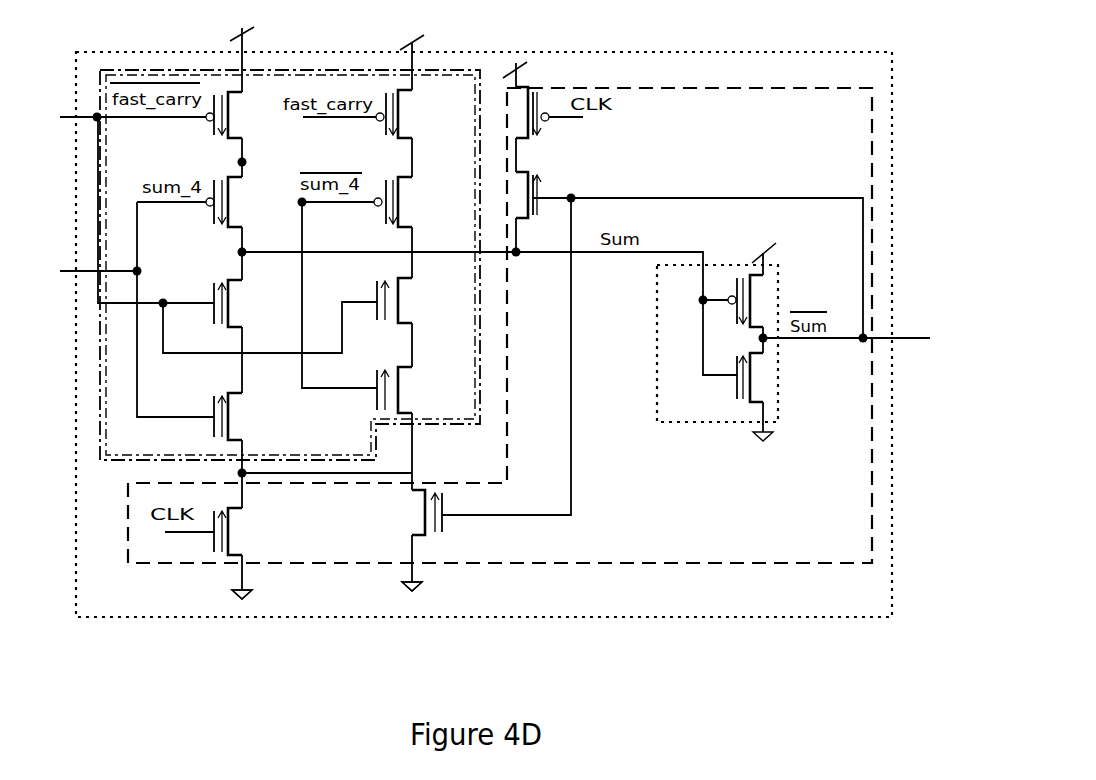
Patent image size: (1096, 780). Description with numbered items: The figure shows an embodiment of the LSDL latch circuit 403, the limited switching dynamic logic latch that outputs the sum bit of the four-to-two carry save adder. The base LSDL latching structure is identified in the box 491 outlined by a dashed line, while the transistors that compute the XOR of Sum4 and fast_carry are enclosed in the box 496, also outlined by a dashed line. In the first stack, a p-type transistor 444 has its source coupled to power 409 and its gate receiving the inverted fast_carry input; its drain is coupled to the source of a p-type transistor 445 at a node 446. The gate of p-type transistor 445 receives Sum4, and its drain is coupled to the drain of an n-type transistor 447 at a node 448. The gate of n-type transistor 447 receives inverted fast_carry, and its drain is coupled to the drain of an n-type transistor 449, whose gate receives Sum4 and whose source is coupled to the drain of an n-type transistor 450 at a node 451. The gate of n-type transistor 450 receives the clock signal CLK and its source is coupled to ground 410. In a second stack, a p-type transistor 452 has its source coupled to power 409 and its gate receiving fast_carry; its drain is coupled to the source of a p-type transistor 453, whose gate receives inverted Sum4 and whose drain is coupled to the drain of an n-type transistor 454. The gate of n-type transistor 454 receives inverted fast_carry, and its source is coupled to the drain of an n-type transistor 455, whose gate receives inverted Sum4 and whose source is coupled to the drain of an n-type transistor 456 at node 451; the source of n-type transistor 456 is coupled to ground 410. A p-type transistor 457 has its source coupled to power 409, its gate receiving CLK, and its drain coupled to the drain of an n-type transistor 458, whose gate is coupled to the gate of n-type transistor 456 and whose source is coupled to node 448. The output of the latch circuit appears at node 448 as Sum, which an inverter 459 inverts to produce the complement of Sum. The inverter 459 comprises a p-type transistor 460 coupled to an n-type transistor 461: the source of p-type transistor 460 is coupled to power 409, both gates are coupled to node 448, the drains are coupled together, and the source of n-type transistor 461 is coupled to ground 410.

The LSDL latch circuit 403 is at (692, 52).
The power 409 is at (240, 36).
The ground 410 is at (245, 592).
The p-type transistor 444 is at (230, 107).
The p-type transistor 445 is at (230, 197).
The node 446 is at (238, 160).
The n-type transistor 447 is at (230, 312).
The node 448 is at (238, 252).
The n-type transistor 449 is at (230, 412).
The n-type transistor 450 is at (230, 537).
The node 451 is at (244, 472).
The p-type transistor 452 is at (398, 102).
The p-type transistor 453 is at (400, 204).
The n-type transistor 454 is at (400, 298).
The n-type transistor 455 is at (400, 396).
The n-type transistor 456 is at (423, 518).
The p-type transistor 457 is at (532, 100).
The n-type transistor 458 is at (522, 192).
The inverter 459 is at (767, 267).
The p-type transistor 460 is at (750, 300).
The n-type transistor 461 is at (752, 375).
The box 491 is at (665, 563).
The box 496 is at (313, 72).